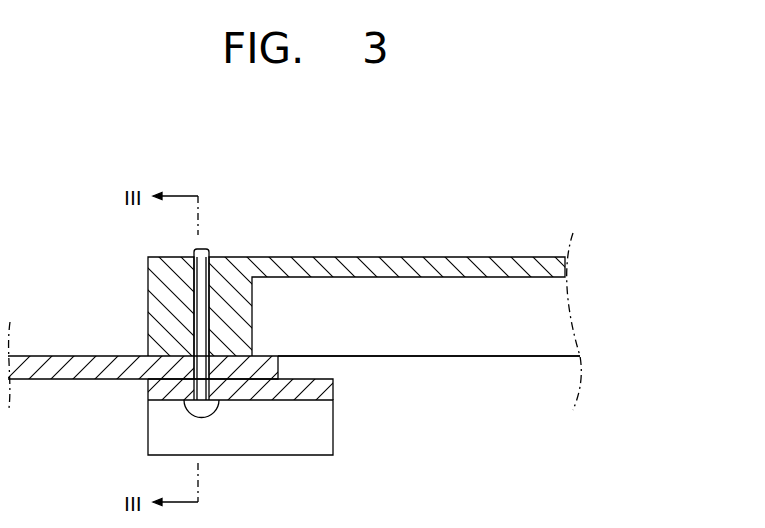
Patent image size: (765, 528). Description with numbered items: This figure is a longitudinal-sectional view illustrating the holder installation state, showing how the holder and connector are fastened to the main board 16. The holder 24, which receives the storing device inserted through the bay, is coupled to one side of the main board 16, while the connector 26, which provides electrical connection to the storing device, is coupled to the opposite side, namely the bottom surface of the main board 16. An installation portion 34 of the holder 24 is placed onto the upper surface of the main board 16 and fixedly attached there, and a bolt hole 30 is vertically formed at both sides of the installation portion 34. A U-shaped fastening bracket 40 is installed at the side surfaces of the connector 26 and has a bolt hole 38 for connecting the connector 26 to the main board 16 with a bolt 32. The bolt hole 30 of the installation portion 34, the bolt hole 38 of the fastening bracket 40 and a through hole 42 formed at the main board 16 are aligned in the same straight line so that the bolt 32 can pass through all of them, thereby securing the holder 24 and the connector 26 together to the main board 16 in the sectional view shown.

The main board 16 is at (47, 364).
The holder 24 is at (369, 255).
The connector 26 is at (335, 443).
The bolt hole 30 is at (210, 324).
The bolt 32 is at (200, 293).
The installation portion 34 is at (158, 311).
The bolt hole 38 is at (212, 388).
The fastening bracket 40 is at (331, 388).
The through hole 42 is at (183, 368).